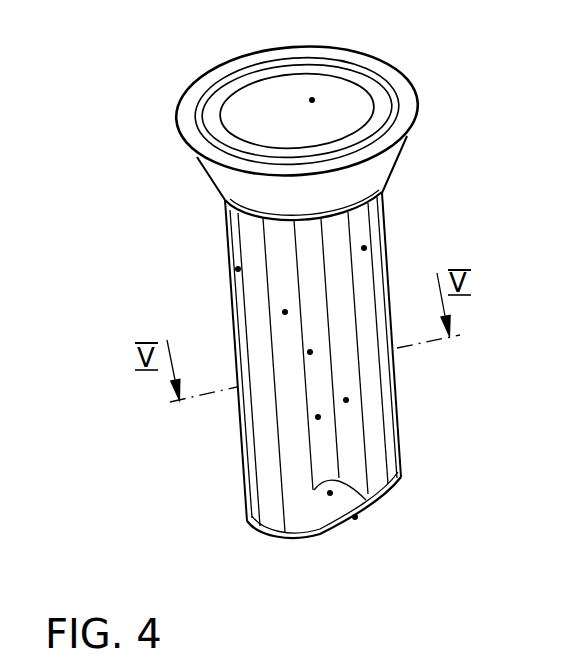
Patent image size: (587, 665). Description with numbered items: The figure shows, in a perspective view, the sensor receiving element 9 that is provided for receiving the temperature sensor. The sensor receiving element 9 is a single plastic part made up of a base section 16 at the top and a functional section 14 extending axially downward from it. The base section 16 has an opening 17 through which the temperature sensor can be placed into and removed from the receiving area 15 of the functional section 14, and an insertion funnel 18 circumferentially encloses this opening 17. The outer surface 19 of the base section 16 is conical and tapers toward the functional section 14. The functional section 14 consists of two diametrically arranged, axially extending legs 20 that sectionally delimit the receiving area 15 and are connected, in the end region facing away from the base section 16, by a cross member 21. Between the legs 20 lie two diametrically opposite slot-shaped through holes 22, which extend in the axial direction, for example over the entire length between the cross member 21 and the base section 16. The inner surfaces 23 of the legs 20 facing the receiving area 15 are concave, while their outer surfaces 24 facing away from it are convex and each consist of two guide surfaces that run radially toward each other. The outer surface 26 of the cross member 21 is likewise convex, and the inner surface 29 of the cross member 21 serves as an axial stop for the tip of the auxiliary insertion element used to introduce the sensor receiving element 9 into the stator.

The sensor receiving element 9 is at (454, 147).
The functional section 14 is at (427, 425).
The receiving area 15 is at (310, 352).
The base section 16 is at (165, 141).
The opening 17 is at (294, 118).
The insertion funnel 18 is at (312, 100).
The outer surface 19 is at (207, 197).
The legs 20 is at (364, 248).
The cross member 21 is at (355, 517).
The through holes 22 is at (318, 417).
The inner surfaces 23 is at (346, 400).
The outer surfaces 24 is at (238, 269).
The outer surface 26 is at (340, 558).
The inner surface 29 is at (330, 493).